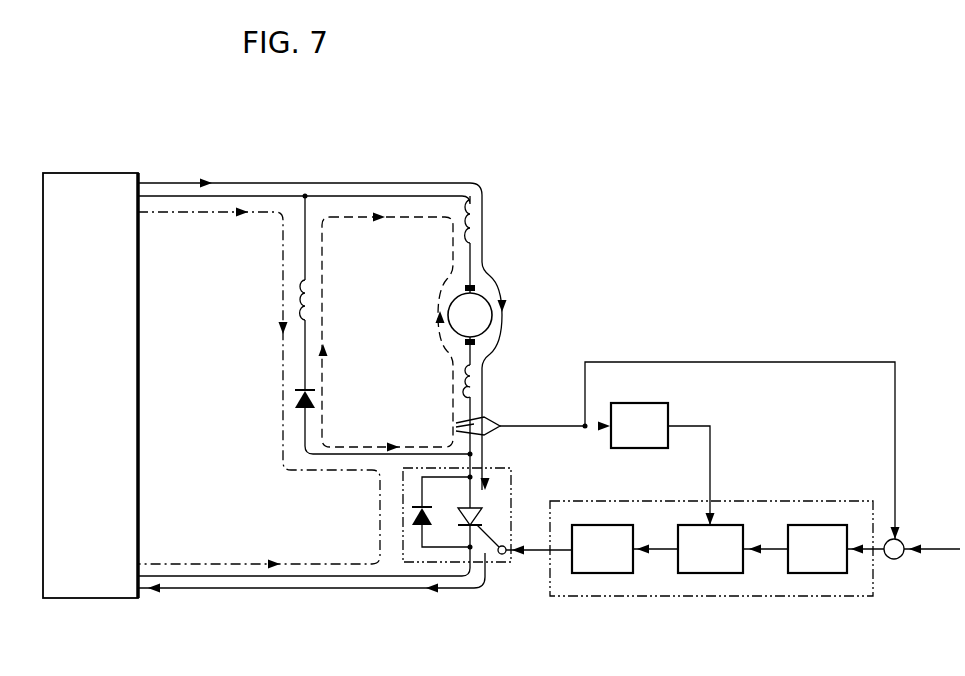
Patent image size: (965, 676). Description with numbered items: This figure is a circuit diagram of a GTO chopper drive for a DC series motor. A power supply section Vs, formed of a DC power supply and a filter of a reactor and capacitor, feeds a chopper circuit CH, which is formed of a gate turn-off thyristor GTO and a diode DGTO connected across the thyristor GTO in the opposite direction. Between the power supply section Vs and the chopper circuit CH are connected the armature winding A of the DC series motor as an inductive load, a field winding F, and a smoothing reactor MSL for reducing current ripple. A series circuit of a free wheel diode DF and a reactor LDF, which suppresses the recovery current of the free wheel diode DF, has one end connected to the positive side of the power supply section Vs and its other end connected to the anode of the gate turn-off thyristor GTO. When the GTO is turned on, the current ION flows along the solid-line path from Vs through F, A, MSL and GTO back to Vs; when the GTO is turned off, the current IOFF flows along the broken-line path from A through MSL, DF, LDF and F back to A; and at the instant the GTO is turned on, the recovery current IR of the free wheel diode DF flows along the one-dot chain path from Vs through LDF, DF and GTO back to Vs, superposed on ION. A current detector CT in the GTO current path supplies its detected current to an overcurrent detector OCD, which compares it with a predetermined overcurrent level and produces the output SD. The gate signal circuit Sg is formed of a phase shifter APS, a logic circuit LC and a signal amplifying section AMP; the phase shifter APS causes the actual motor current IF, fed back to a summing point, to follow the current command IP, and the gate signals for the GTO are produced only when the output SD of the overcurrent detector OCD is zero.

The power supply section Vs is at (101, 173).
The on-state current ION is at (361, 183).
The recovery current IR is at (190, 214).
The off-state current IOFF is at (420, 218).
The reactor LDF is at (297, 301).
The free wheel diode DF is at (295, 400).
The field winding F is at (478, 226).
The armature winding A is at (479, 328).
The smoothing reactor MSL is at (463, 383).
The current detector CT is at (487, 421).
The chopper circuit CH is at (500, 468).
The gate turn-off thyristor GTO is at (482, 515).
The diode DGTO is at (412, 517).
The overcurrent detector OCD is at (662, 437).
The overcurrent detector output SD is at (712, 444).
The gate signal circuit Sg is at (660, 598).
The signal amplifying section AMP is at (628, 562).
The logic circuit LC is at (731, 562).
The phase shifter APS is at (841, 562).
The actual motor current IF is at (918, 534).
The current command IP is at (901, 565).